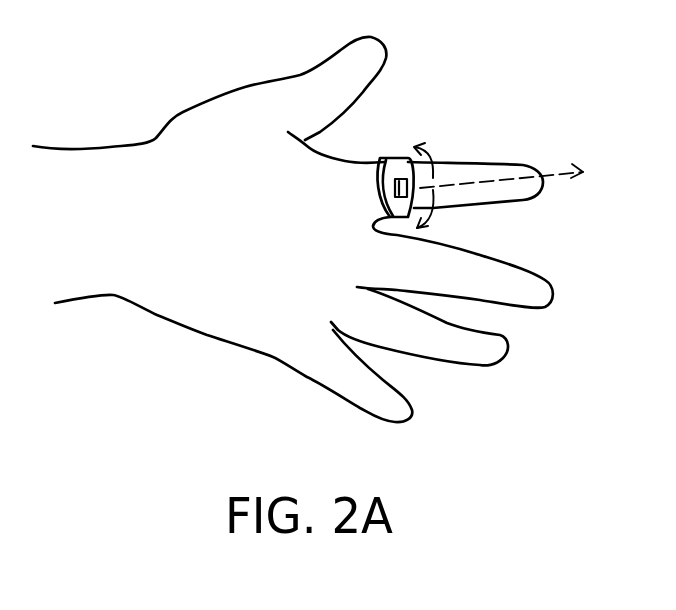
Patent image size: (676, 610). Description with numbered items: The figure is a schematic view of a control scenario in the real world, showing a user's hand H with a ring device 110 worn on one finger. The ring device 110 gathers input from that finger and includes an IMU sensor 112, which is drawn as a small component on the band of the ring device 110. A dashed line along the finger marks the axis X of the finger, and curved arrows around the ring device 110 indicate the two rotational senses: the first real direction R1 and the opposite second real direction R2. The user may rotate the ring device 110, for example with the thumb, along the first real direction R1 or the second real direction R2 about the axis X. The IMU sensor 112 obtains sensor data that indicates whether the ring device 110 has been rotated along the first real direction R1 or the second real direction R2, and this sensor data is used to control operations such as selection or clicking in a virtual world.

The hand H is at (223, 92).
The ring device 110 is at (394, 160).
The IMU sensor 112 is at (392, 190).
The first real direction R1 is at (438, 154).
The second real direction R2 is at (446, 217).
The axis of finger X is at (514, 173).